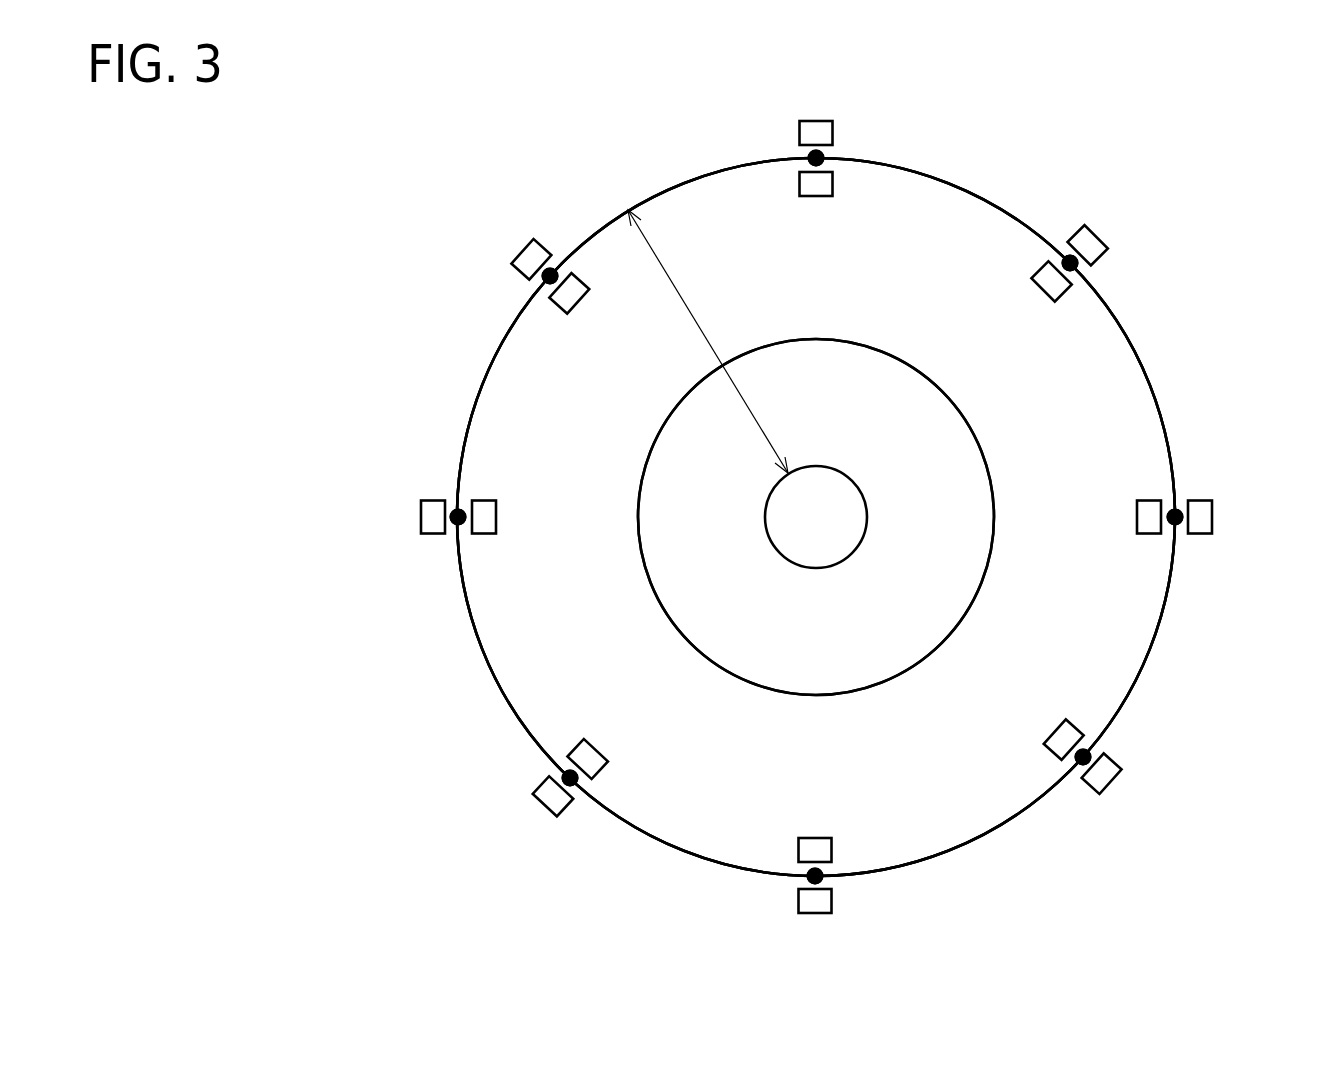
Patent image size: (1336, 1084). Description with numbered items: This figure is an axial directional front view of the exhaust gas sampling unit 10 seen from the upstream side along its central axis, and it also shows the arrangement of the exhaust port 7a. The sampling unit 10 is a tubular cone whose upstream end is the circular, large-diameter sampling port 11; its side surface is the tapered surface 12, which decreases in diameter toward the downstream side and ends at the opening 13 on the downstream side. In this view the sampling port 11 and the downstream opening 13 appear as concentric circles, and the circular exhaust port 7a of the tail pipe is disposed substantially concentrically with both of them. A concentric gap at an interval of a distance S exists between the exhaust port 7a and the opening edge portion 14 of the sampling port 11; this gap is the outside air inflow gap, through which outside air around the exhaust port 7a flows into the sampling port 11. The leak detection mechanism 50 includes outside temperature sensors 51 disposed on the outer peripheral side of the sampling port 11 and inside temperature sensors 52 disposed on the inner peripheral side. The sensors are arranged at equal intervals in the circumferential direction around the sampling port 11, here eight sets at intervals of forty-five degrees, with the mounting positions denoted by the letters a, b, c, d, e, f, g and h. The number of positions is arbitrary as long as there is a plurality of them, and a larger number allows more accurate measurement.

The exhaust gas sampling unit 10 is at (766, 464).
The opening edge portion 14 is at (487, 660).
The sampling port 11 is at (766, 517).
The tapered surface 12 is at (540, 662).
The opening on the downstream side 13 is at (640, 536).
The exhaust port 7a is at (795, 563).
The distance S is at (708, 341).
The leak detection mechanism 50 is at (770, 132).
The outside temperature sensor 51 is at (815, 123).
The inside temperature sensor 52 is at (798, 184).
The mounting position a is at (826, 156).
The mounting position b is at (1076, 266).
The mounting position c is at (1178, 528).
The mounting position d is at (1082, 765).
The mounting position e is at (805, 880).
The mounting position f is at (575, 783).
The mounting position g is at (455, 525).
The mounting position h is at (545, 283).